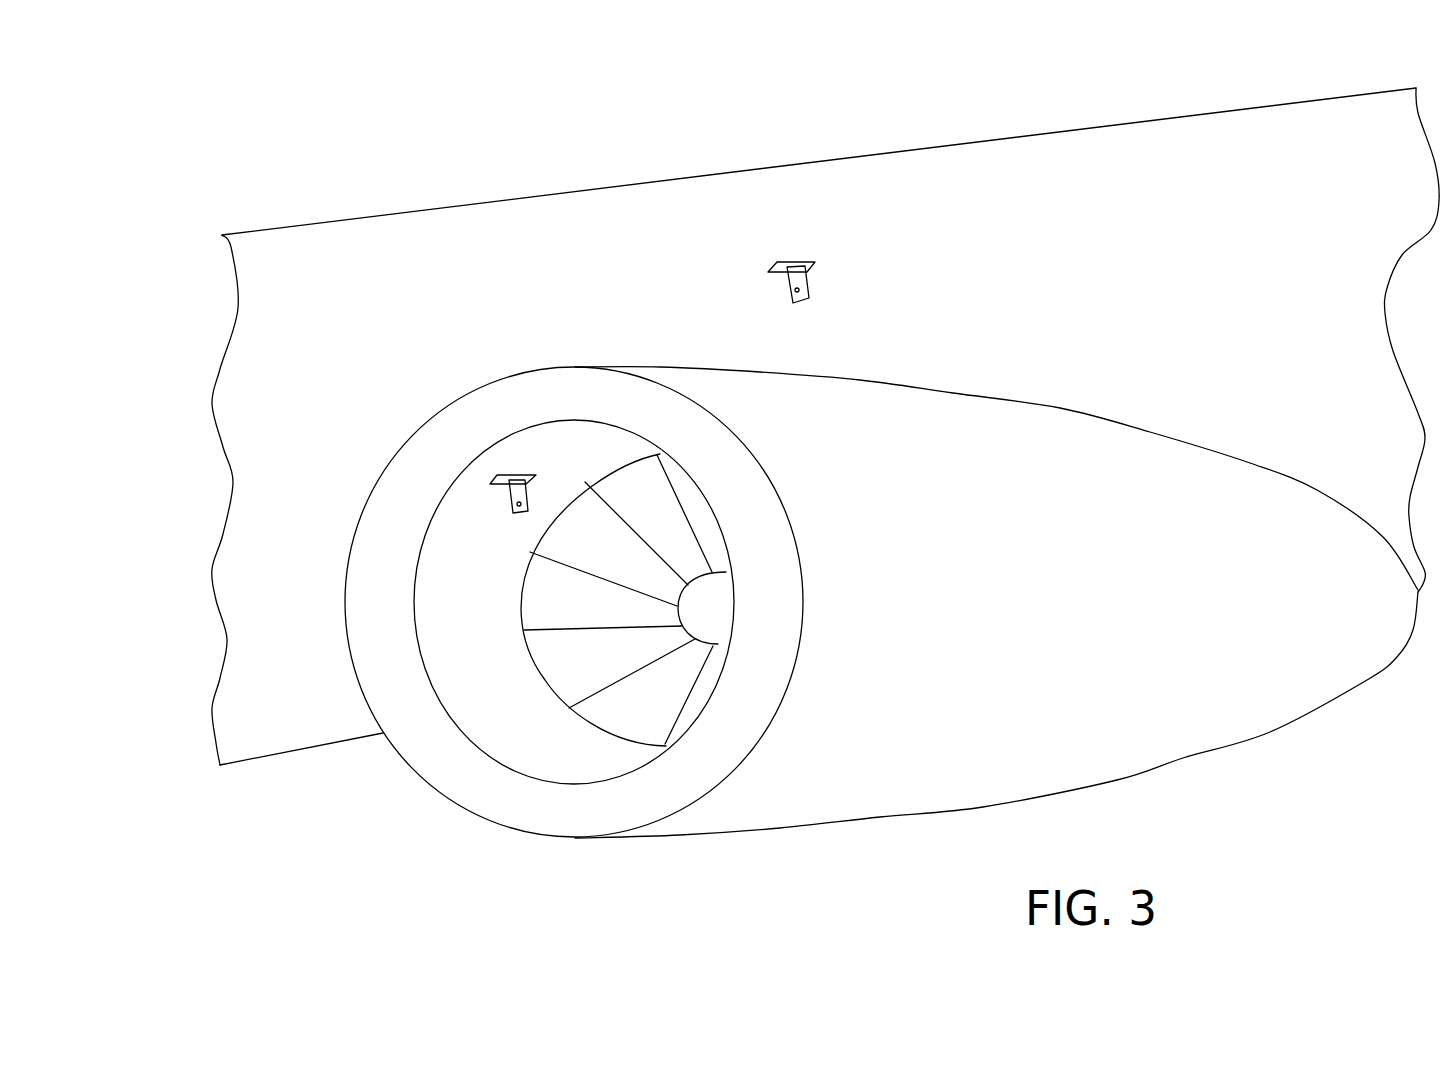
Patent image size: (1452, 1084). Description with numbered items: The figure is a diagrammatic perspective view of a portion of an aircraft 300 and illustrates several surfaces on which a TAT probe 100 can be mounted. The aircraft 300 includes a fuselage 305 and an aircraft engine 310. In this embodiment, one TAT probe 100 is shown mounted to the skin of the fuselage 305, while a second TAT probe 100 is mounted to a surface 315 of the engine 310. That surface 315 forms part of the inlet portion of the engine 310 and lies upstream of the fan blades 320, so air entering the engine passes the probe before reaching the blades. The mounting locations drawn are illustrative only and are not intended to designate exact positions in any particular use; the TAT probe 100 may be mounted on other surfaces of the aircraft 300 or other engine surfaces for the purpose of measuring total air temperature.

The aircraft 300 is at (333, 112).
The fuselage 305 is at (685, 222).
The aircraft engine 310 is at (951, 393).
The surface 315 is at (520, 747).
The fan blades 320 is at (640, 703).
The TAT probe 100 is at (788, 282).